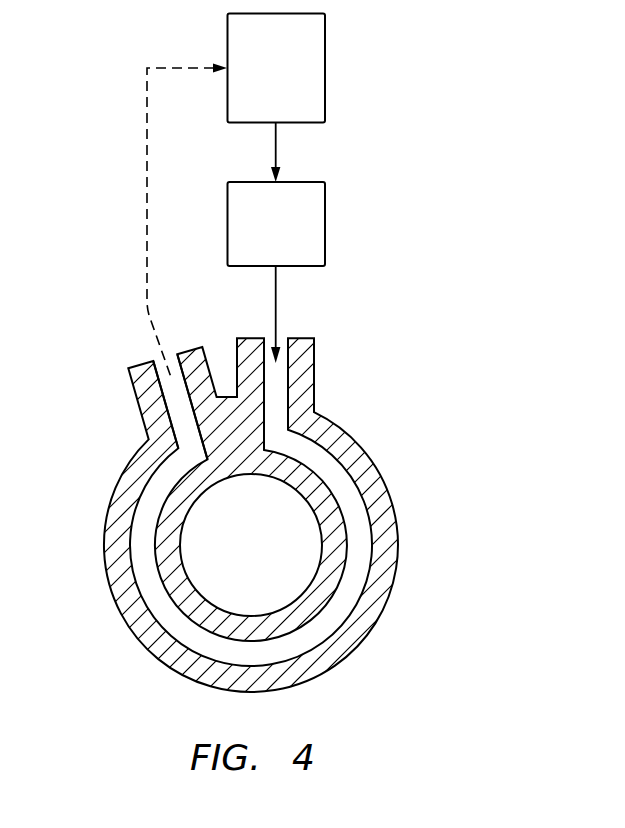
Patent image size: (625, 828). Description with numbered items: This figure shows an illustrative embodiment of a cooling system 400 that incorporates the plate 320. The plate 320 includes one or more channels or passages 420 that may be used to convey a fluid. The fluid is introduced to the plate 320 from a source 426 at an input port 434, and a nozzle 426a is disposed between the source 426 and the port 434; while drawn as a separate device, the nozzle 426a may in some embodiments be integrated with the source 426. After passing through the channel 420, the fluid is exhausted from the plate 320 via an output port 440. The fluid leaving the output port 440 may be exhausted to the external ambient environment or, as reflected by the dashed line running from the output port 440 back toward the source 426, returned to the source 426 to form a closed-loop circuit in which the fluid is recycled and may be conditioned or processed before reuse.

The cooling system 400 is at (397, 141).
The source 426 is at (254, 110).
The nozzle 426a is at (247, 253).
The input port 434 is at (273, 382).
The output port 440 is at (177, 396).
The channel 420 is at (142, 565).
The plate 320 is at (396, 641).